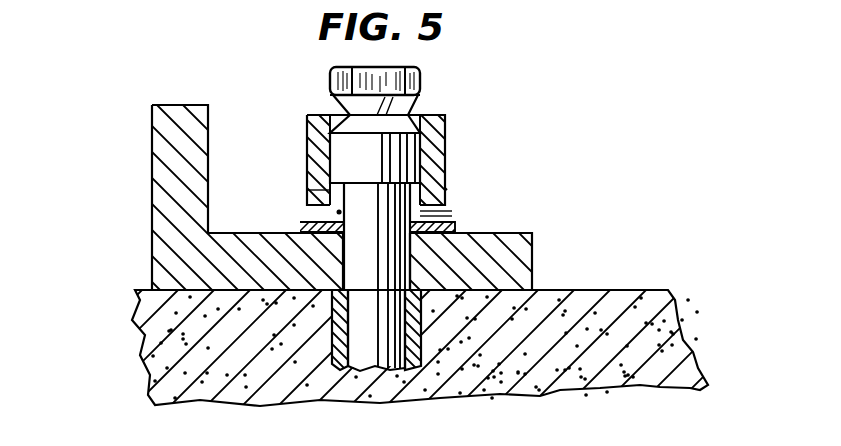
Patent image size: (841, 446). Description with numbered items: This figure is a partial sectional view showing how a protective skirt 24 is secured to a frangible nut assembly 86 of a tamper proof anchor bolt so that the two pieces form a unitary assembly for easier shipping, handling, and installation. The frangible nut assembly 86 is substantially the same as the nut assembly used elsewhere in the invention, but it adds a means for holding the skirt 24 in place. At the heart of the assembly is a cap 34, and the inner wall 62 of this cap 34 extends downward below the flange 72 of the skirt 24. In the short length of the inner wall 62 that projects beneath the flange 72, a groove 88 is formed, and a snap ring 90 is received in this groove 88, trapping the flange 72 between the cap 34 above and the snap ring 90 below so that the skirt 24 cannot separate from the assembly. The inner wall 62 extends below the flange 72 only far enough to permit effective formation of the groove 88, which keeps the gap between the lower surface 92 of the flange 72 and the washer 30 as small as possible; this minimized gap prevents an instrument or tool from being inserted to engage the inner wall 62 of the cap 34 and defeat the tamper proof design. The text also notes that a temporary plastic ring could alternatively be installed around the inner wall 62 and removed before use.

The skirt 24 is at (447, 130).
The washer 30 is at (300, 228).
The cap 34 is at (330, 112).
The inner wall 62 is at (445, 190).
The flange 72 is at (318, 193).
The frangible nut assembly 86 is at (426, 67).
The groove 88 is at (352, 206).
The snap ring 90 is at (420, 215).
The lower surface 92 is at (420, 210).